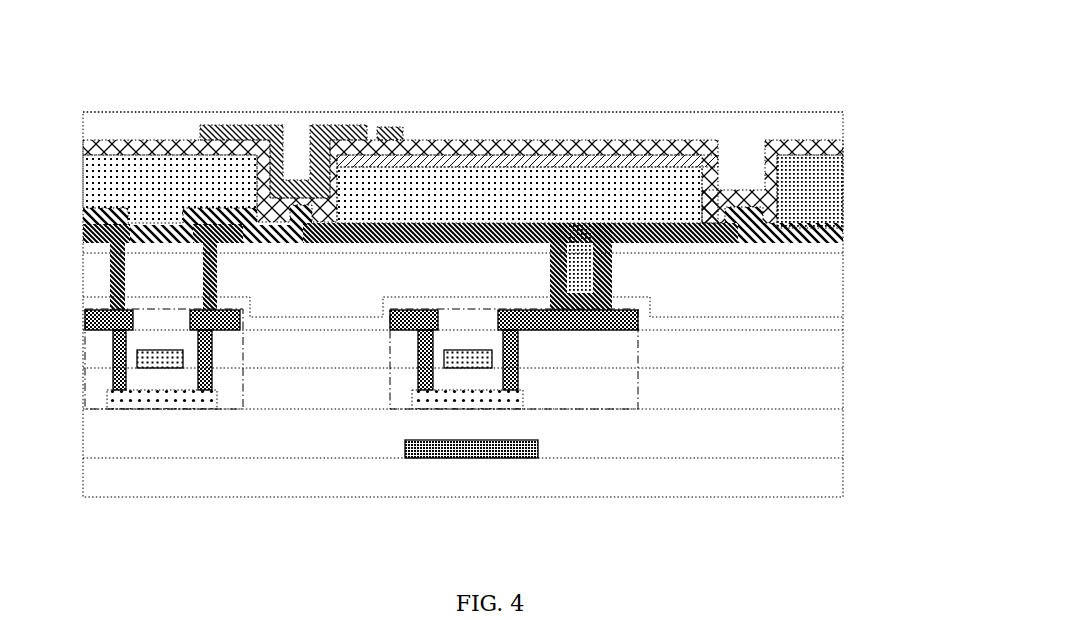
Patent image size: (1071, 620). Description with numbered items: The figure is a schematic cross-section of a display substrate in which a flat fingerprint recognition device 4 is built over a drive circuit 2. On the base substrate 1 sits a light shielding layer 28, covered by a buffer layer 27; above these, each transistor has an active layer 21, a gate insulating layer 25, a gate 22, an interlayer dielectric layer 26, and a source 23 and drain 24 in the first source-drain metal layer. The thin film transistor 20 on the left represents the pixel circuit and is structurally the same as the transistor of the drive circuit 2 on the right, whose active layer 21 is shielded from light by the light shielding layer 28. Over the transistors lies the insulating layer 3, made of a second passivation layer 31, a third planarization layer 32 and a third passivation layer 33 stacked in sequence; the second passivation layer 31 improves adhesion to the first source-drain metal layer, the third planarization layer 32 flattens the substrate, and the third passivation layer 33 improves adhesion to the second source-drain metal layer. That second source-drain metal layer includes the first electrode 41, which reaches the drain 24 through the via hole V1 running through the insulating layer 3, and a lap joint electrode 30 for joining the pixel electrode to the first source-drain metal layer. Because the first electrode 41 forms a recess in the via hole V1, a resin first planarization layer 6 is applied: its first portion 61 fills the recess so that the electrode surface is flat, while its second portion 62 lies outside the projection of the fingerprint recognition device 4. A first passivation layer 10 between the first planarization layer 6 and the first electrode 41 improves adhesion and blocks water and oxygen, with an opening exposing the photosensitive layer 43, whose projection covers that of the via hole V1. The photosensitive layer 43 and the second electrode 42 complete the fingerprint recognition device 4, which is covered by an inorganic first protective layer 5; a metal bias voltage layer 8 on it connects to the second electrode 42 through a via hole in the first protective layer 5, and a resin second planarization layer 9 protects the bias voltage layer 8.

The base substrate 1 is at (792, 480).
The drive circuit 2 is at (497, 406).
The insulating layer 3 is at (517, 287).
The fingerprint recognition device 4 is at (527, 111).
The first protective layer 5 is at (735, 147).
The first planarization layer 6 is at (845, 188).
The bias voltage layer 8 is at (332, 127).
The second planarization layer 9 is at (790, 125).
The first passivation layer 10 is at (790, 232).
The thin film transistor 20 is at (82, 388).
The active layer 21 is at (500, 400).
The gate 22 is at (465, 350).
The source 23 is at (416, 310).
The drain 24 is at (515, 310).
The gate insulating layer 25 is at (793, 392).
The interlayer dielectric layer 26 is at (790, 355).
The buffer layer 27 is at (792, 437).
The light shielding layer 28 is at (472, 460).
The lap joint electrode 30 is at (83, 237).
The second passivation layer 31 is at (792, 326).
The third planarization layer 32 is at (795, 285).
The third passivation layer 33 is at (792, 246).
The first electrode 41 is at (451, 223).
The second electrode 42 is at (486, 167).
The photosensitive layer 43 is at (523, 197).
The first portion 61 is at (585, 263).
The second portion 62 is at (83, 181).
The via hole V1 is at (614, 278).